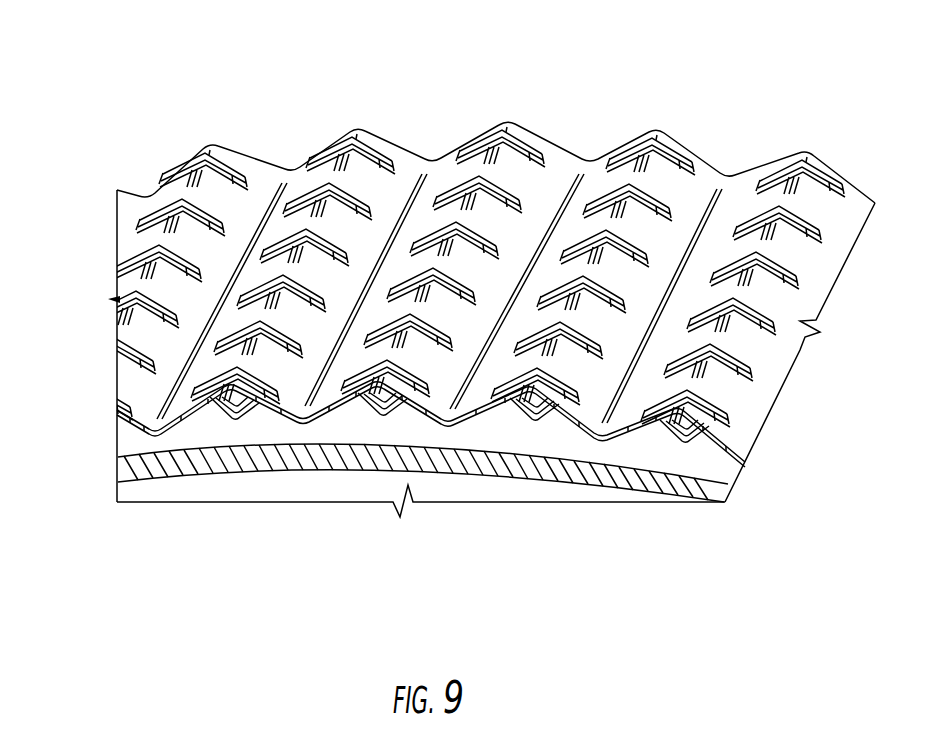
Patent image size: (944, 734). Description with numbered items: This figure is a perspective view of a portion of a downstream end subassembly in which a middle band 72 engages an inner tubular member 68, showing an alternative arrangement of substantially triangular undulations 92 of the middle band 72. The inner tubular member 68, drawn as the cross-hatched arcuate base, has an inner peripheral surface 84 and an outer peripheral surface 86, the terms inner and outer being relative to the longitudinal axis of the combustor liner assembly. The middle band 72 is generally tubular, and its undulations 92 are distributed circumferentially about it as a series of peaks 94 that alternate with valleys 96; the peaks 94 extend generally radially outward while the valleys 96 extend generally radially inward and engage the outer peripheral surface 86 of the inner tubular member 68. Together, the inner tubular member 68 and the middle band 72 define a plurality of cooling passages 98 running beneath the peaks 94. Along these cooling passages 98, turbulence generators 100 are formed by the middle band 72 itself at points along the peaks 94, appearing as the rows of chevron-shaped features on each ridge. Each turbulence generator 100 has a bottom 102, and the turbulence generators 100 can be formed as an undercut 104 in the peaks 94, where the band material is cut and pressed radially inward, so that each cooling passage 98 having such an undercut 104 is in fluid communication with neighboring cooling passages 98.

The inner tubular member 68 is at (116, 469).
The middle band 72 is at (116, 222).
The inner peripheral surface 84 is at (226, 474).
The outer peripheral surface 86 is at (130, 440).
The undulations 92 is at (493, 97).
The peaks 94 is at (207, 143).
The valleys 96 is at (303, 421).
The cooling passages 98 is at (700, 446).
The turbulence generators 100 is at (352, 128).
The bottom 102 is at (528, 420).
The undercut 104 is at (513, 405).